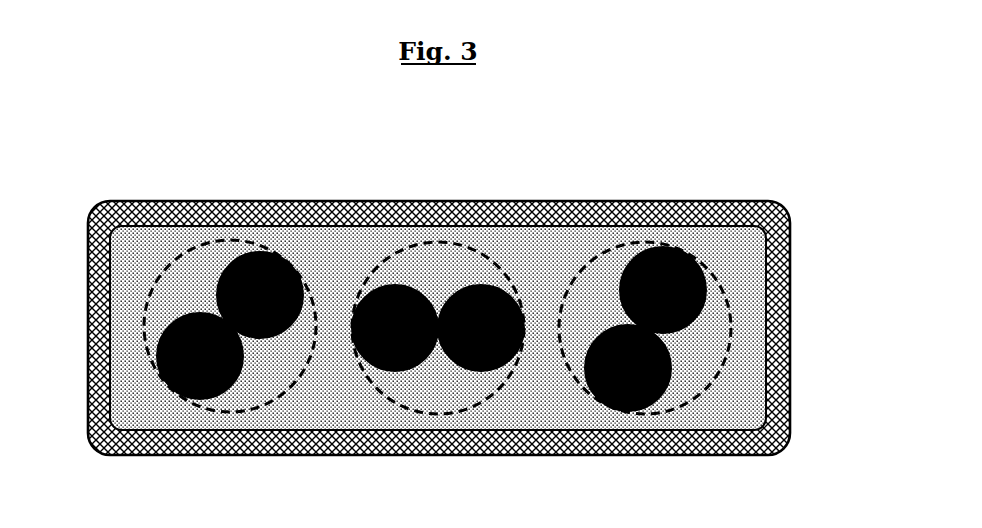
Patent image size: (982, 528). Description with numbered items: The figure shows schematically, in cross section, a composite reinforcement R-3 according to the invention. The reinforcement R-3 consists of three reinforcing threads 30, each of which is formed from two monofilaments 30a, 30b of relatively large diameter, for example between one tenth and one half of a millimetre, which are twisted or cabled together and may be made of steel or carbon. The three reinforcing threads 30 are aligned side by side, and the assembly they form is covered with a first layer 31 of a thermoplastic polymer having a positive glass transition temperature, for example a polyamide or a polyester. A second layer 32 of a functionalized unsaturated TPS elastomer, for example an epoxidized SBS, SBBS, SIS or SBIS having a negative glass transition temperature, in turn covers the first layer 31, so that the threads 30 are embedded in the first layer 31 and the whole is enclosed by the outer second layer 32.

The reinforcing threads 30 is at (612, 262).
The monofilament 30a is at (658, 277).
The monofilament 30b is at (623, 360).
The first layer 31 is at (532, 377).
The second layer 32 is at (240, 208).
The composite reinforcement R-3 is at (580, 153).